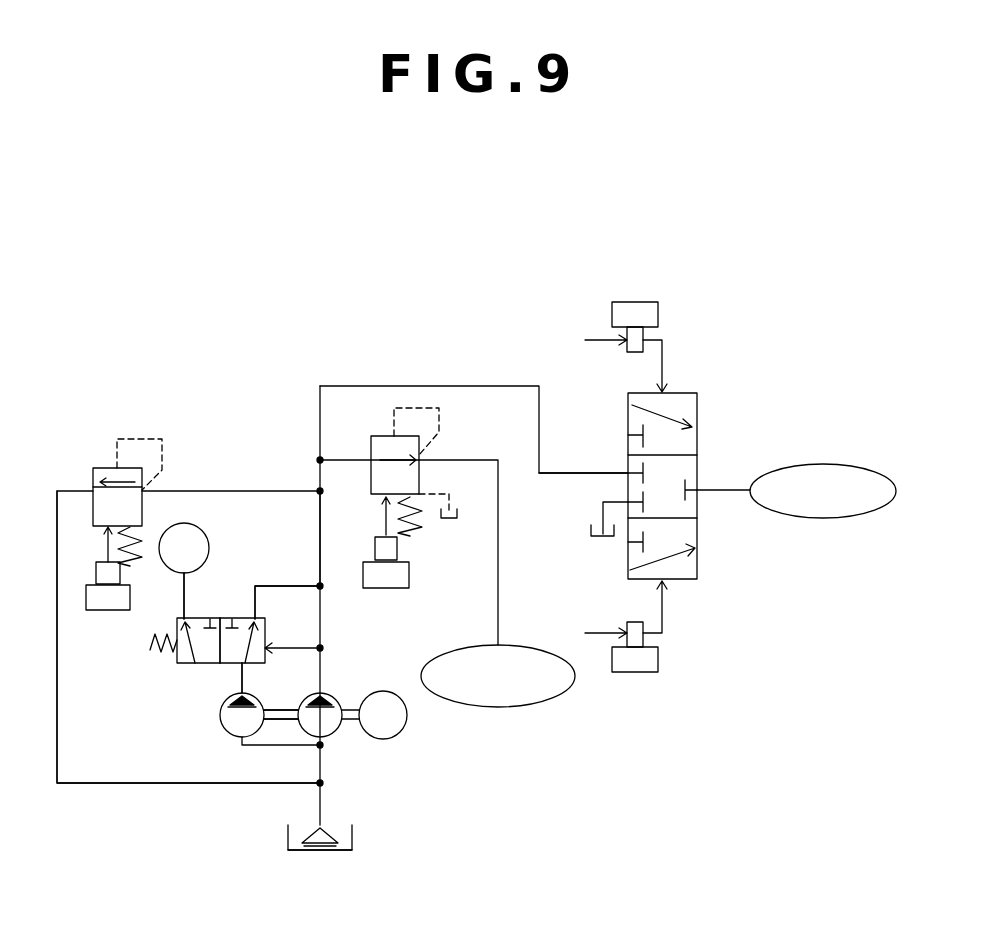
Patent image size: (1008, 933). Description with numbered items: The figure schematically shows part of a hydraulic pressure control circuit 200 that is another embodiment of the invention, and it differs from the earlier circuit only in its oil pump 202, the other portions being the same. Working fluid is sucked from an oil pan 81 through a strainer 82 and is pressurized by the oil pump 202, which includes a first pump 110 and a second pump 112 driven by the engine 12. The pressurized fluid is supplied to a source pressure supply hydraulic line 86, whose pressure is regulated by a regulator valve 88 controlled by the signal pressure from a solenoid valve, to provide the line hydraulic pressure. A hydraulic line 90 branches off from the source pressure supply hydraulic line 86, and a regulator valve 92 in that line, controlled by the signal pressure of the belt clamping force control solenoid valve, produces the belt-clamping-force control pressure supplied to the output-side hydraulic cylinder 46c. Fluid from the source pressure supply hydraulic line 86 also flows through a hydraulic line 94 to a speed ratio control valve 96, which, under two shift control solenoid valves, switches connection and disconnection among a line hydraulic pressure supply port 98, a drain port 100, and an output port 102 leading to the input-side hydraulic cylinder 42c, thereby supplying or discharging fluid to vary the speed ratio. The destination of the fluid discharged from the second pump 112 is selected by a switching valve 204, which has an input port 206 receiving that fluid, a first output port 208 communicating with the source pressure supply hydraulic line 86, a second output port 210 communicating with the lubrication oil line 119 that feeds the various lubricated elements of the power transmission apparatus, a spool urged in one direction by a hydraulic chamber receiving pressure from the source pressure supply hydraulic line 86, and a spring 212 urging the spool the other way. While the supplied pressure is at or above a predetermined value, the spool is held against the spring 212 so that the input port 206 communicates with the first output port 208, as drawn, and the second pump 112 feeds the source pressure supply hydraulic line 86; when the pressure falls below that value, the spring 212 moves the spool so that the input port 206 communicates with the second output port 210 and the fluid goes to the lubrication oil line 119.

The hydraulic pressure control circuit 200 is at (475, 287).
The hydraulic line 94 is at (345, 386).
The regulator valve 88 is at (98, 441).
The hydraulic line 90 is at (340, 455).
The regulator valve 92 is at (452, 455).
The source pressure supply hydraulic line 86 is at (320, 525).
The lubrication oil line 119 is at (210, 618).
The second output port 210 is at (183, 617).
The spring 212 is at (155, 655).
The switching valve 204 is at (232, 608).
The first output port 208 is at (257, 619).
The oil pump 202 is at (170, 727).
The input port 206 is at (242, 672).
The second pump 112 is at (232, 722).
The first pump 110 is at (331, 716).
The engine 12 is at (388, 695).
The oil pan 81 is at (353, 838).
The strainer 82 is at (322, 851).
The speed ratio control valve 96 is at (730, 398).
The line hydraulic pressure supply port 98 is at (627, 473).
The drain port 100 is at (627, 500).
The output port 102 is at (700, 489).
The input-side hydraulic cylinder 42c is at (824, 469).
The output-side hydraulic cylinder 46c is at (500, 698).